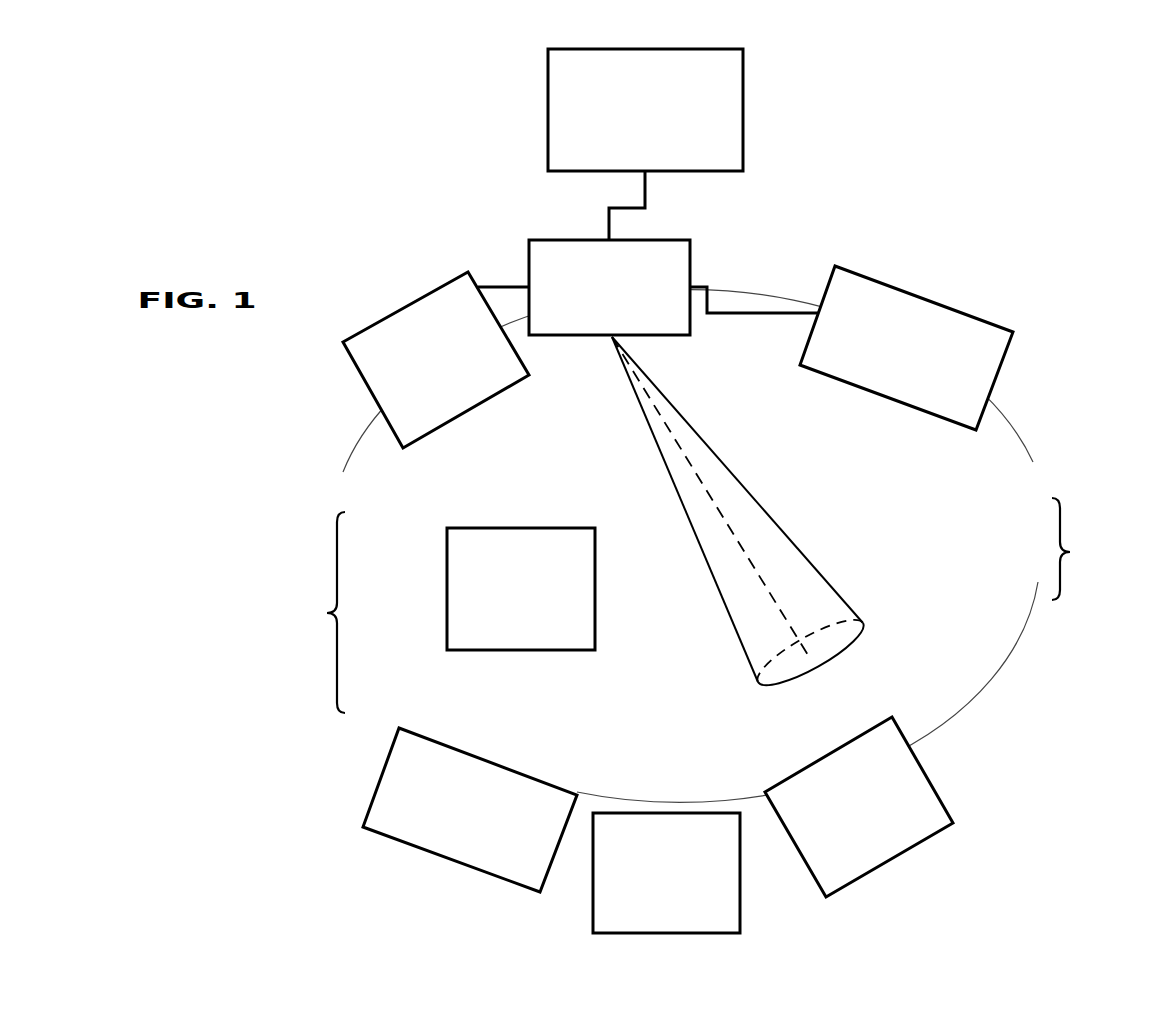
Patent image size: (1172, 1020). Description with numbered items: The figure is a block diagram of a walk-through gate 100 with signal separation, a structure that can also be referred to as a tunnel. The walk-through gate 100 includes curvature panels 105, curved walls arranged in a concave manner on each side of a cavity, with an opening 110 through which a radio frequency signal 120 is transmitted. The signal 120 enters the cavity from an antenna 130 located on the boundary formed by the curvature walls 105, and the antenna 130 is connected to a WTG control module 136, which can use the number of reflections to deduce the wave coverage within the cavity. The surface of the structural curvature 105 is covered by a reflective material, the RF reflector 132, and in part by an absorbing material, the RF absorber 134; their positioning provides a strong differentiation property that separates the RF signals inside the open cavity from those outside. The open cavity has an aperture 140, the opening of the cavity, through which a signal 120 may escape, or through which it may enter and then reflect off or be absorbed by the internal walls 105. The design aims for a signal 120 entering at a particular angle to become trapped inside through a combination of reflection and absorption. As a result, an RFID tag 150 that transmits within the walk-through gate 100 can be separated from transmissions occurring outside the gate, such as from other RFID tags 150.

The walk-through gate 100 is at (447, 51).
The curvature panels 105 is at (987, 427).
The opening 110 is at (612, 338).
The RF signal 120 is at (745, 540).
The antenna 130 is at (588, 319).
The RF reflector 132 is at (414, 403).
The RF absorber 134 is at (884, 387).
The WTG control module 136 is at (625, 154).
The aperture 140 is at (327, 613).
The RFID tag 150 is at (500, 633).